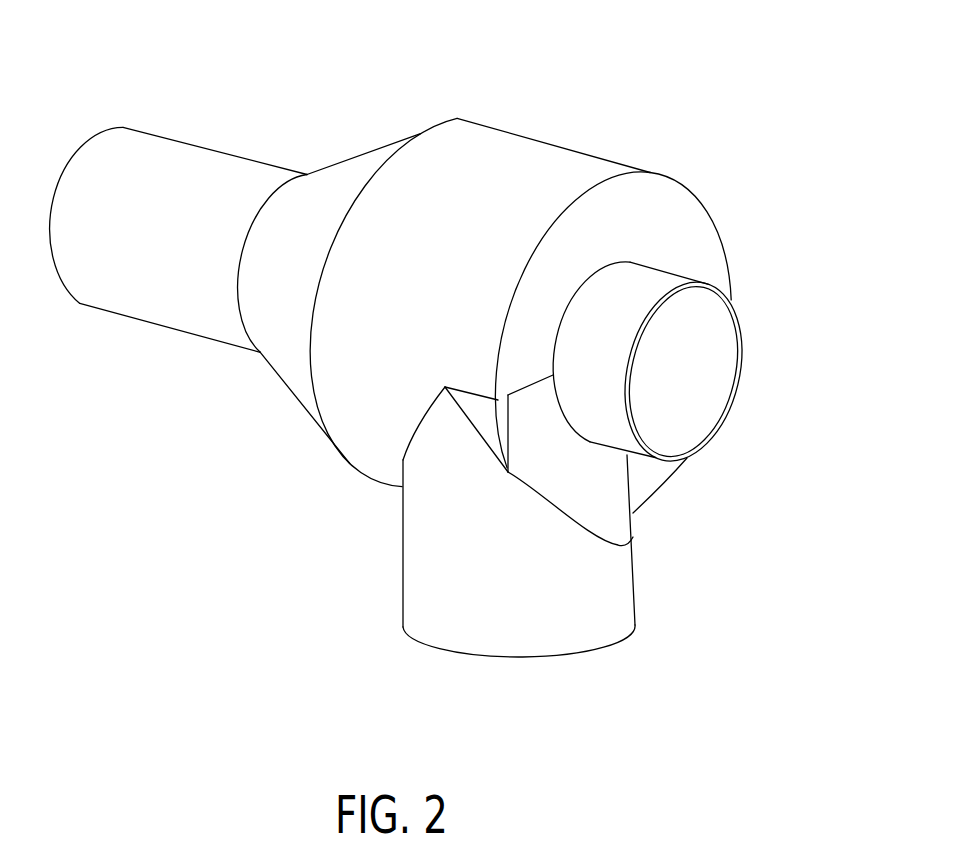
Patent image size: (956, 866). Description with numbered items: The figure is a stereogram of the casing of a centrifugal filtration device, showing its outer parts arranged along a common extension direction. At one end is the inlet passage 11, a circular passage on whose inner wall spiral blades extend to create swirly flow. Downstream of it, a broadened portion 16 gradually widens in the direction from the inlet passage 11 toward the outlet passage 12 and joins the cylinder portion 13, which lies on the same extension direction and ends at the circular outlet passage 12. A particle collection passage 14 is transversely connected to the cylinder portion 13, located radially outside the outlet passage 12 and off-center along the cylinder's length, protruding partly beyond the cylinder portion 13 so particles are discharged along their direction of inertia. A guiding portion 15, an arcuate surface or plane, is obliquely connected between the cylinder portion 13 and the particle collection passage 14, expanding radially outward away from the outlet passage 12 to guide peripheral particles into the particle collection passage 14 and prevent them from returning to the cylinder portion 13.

The inlet passage 11 is at (108, 157).
The outlet passage 12 is at (707, 354).
The cylinder portion 13 is at (520, 153).
The particle collection passage 14 is at (575, 632).
The guiding portion 15 is at (602, 498).
The broadened portion 16 is at (333, 183).